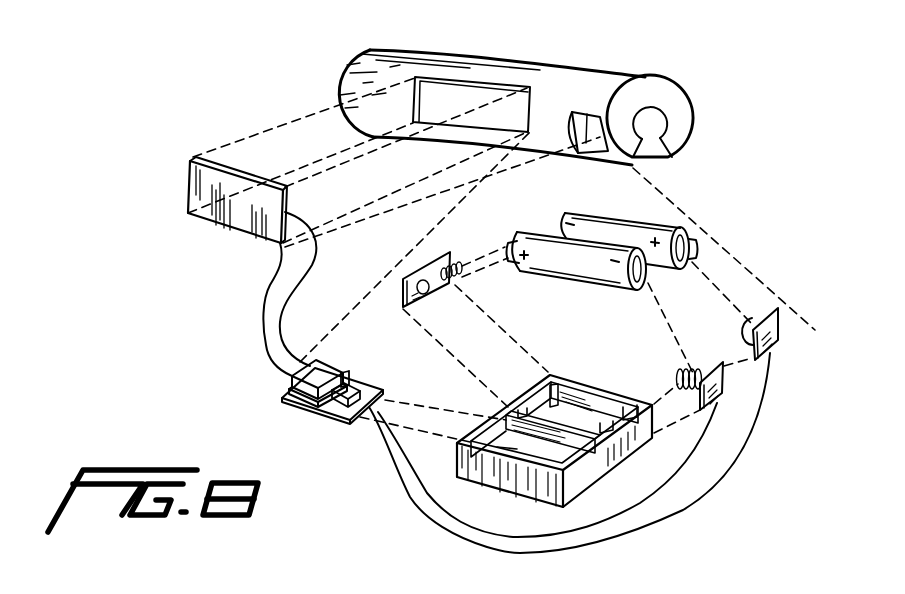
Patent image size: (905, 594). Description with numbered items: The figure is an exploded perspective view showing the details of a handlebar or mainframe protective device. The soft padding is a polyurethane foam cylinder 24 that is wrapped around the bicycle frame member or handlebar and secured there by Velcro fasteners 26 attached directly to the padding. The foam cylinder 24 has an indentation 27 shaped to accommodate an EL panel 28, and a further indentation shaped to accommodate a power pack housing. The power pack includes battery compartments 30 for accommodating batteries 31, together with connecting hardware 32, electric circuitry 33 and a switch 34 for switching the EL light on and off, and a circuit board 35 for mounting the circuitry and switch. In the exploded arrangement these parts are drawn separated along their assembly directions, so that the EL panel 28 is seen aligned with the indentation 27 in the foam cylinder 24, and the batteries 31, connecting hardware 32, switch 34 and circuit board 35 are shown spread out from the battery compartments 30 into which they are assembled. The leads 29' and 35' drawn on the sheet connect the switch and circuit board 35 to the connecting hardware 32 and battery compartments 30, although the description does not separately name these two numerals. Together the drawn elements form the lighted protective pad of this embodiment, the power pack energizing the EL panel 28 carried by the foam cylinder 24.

The polyurethane foam cylinder 24 is at (413, 63).
The Velcro fasteners 26 is at (751, 6).
The indentation 27 is at (480, 95).
The EL panel 28 is at (587, 122).
The electrical leads 29' is at (572, 453).
The battery compartments 30 is at (572, 418).
The batteries 31 is at (568, 217).
The connecting hardware 32 is at (428, 264).
The electric circuitry 33 is at (318, 372).
The switch 34 is at (345, 371).
The circuit board 35 is at (307, 411).
The switch lead 35' is at (434, 486).